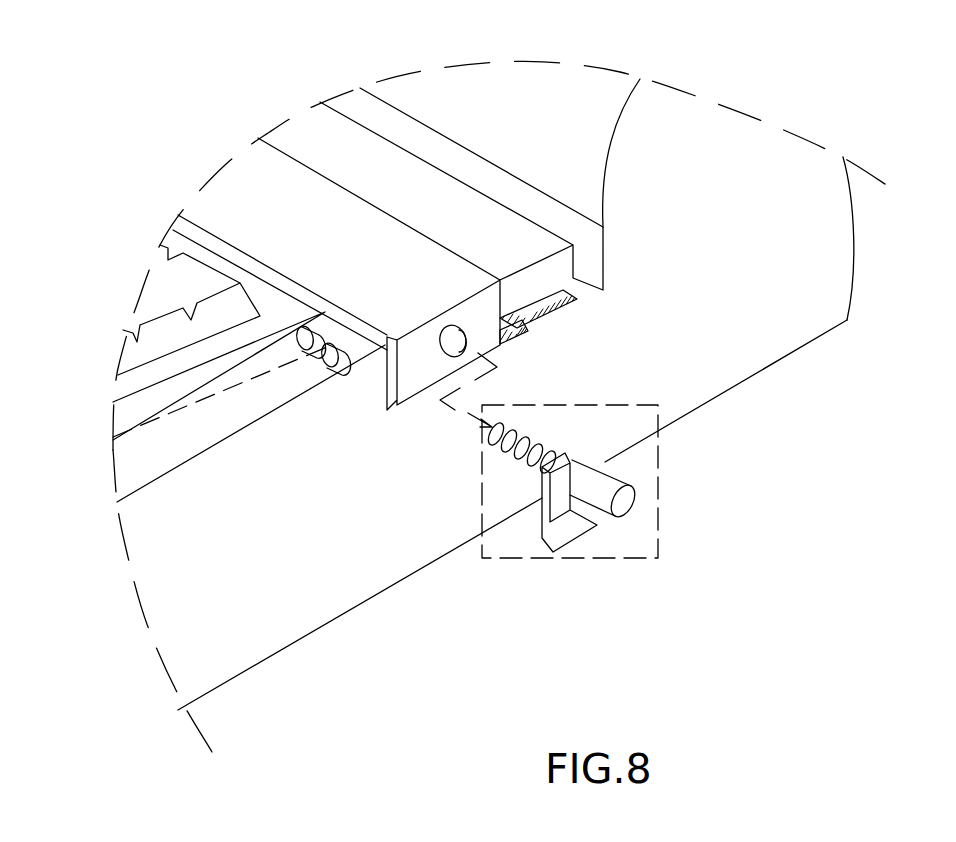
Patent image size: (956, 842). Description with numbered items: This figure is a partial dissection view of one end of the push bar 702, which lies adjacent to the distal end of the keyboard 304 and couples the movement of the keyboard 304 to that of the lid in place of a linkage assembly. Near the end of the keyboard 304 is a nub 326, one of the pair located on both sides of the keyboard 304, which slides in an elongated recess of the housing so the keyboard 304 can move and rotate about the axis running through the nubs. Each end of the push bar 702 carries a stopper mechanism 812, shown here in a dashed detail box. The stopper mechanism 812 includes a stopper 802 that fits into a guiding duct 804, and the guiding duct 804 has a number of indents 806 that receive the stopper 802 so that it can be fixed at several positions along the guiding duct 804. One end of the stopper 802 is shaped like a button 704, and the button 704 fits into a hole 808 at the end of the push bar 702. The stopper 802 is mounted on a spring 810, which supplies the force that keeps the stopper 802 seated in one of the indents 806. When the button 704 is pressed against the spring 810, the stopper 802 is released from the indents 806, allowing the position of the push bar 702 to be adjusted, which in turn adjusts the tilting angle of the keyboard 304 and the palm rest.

The keyboard 304 is at (148, 272).
The nub 326 is at (340, 347).
The push bar 702 is at (243, 180).
The button 704 is at (606, 485).
The stopper 802 is at (548, 538).
The guiding duct 804 is at (537, 316).
The indents 806 is at (575, 309).
The hole 808 is at (458, 343).
The spring 810 is at (548, 434).
The stopper mechanism 812 is at (528, 567).